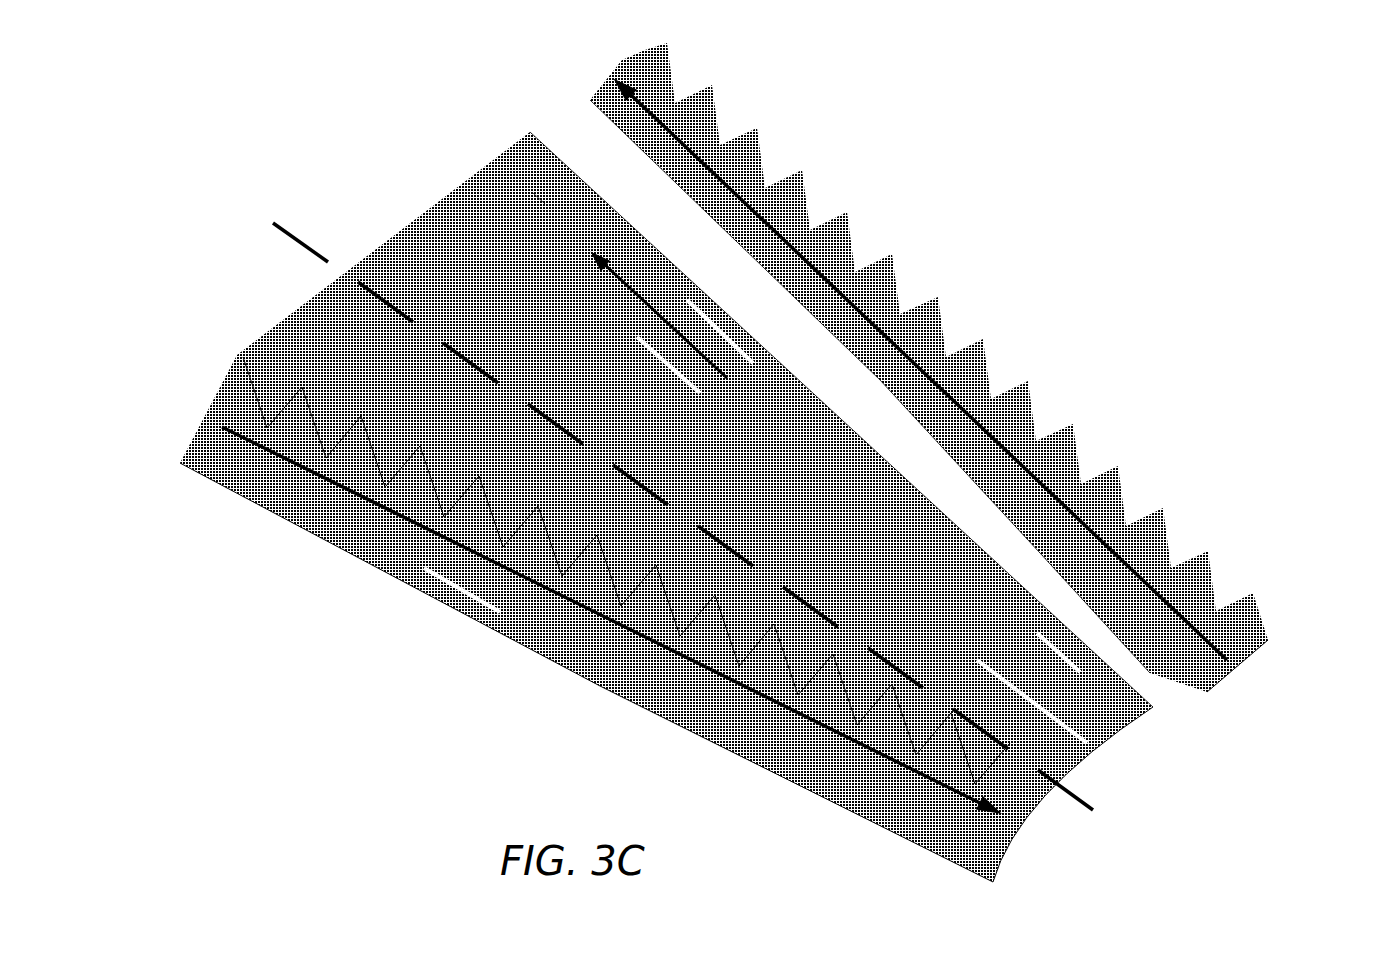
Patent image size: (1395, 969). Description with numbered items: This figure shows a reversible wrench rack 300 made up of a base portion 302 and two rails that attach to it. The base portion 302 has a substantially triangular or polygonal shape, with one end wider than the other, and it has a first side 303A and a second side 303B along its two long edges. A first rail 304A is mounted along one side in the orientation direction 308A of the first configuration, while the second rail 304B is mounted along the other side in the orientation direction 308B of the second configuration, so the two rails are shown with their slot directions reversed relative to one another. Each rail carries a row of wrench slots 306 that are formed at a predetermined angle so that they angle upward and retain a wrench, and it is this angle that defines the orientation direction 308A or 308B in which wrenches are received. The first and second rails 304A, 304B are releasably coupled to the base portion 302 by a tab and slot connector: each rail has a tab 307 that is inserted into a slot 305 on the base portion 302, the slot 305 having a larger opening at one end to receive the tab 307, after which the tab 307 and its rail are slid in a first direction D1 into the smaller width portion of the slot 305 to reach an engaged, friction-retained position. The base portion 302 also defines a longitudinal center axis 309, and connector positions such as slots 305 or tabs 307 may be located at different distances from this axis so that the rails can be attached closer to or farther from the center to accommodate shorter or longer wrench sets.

The wrench rack 300 is at (1140, 800).
The base portion 302 is at (435, 203).
The first side 303A is at (420, 570).
The second side 303B is at (532, 192).
The first rail 304A is at (232, 413).
The second rail 304B is at (1250, 657).
The slot 305 is at (1097, 687).
The wrench slots 306 is at (1003, 377).
The tab 307 is at (693, 223).
The orientation direction 308A is at (290, 462).
The orientation direction 308B is at (750, 205).
The longitudinal center axis 309 is at (292, 238).
The first direction D1 is at (674, 332).